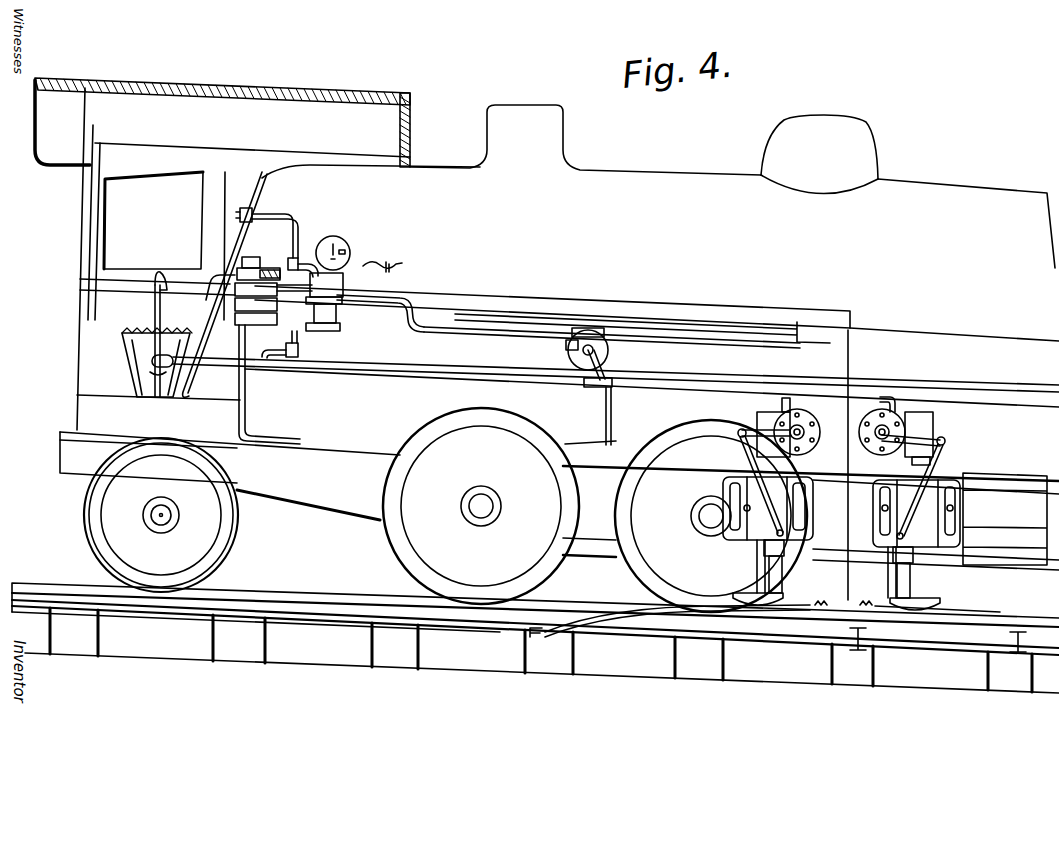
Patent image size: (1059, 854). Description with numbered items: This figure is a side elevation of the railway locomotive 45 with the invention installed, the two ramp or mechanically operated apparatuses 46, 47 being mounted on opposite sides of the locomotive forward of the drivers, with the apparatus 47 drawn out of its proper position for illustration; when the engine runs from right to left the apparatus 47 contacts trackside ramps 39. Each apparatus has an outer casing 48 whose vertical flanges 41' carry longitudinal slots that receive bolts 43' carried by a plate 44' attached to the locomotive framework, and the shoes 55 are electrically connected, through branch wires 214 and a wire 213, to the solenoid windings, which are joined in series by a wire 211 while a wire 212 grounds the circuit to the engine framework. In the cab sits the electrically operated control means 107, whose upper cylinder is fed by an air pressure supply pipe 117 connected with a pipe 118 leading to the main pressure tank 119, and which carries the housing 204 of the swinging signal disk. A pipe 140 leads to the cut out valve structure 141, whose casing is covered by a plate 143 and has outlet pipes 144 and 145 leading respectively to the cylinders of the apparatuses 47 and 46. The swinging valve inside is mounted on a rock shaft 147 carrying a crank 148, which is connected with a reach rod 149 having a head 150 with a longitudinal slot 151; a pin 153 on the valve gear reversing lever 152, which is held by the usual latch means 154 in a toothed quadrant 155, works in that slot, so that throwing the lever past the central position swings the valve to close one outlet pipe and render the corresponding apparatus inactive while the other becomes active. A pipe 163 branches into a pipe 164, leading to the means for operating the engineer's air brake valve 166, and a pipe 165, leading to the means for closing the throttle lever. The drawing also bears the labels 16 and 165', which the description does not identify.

The rail 16 is at (298, 605).
The ramp 39 is at (987, 620).
The vertical flange 41' is at (849, 511).
The bolt 43' is at (882, 507).
The plate 44' is at (1002, 508).
The railway locomotive 45 is at (732, 186).
The ramp or mechanically operated apparatus 46 is at (942, 433).
The ramp or mechanically operated apparatus 47 is at (750, 413).
The outer casing 48 is at (767, 527).
The shoe 55 is at (943, 599).
The electrically operated control means 107 is at (338, 331).
The air pressure supply pipe 117 is at (300, 322).
The pipe 118 is at (431, 360).
The main pressure tank 119 is at (657, 450).
The pipe 140 is at (433, 323).
The cut out valve structure 141 is at (600, 337).
The plate 143 is at (603, 350).
The outlet pipe 144 is at (606, 405).
The outlet pipe 145 is at (740, 363).
The rock shaft 147 is at (593, 332).
The crank 148 is at (566, 346).
The reach rod 149 is at (463, 377).
The head 150 is at (186, 382).
The longitudinal slot 151 is at (157, 373).
The valve gear shifting or reversing lever 152 is at (156, 314).
The pin 153 is at (152, 361).
The latch means 154 is at (157, 293).
The toothed quadrant 155 is at (158, 337).
The pipe 163 is at (215, 272).
The pipe 164 is at (269, 258).
The pipe 165 is at (293, 228).
The pipe fitting 165' is at (323, 248).
The engineer's air brake valve 166 is at (230, 300).
The casing or housing 204 is at (348, 248).
The wire 211 is at (378, 291).
The wire 212 is at (402, 263).
The wire 213 is at (565, 295).
The branch wire 214 is at (772, 621).